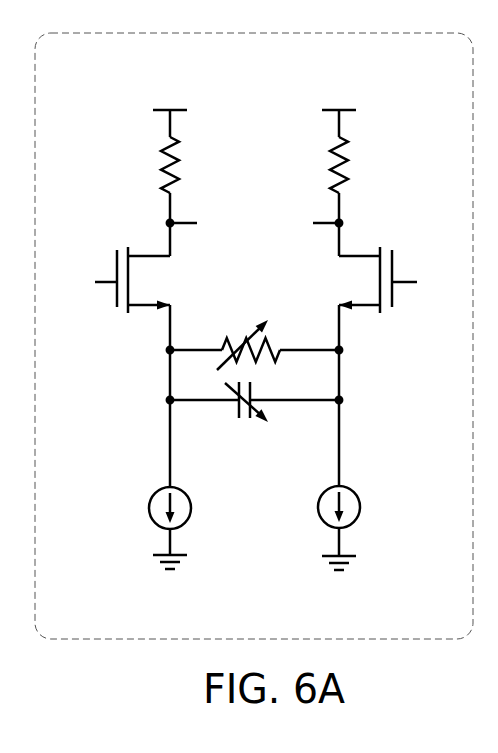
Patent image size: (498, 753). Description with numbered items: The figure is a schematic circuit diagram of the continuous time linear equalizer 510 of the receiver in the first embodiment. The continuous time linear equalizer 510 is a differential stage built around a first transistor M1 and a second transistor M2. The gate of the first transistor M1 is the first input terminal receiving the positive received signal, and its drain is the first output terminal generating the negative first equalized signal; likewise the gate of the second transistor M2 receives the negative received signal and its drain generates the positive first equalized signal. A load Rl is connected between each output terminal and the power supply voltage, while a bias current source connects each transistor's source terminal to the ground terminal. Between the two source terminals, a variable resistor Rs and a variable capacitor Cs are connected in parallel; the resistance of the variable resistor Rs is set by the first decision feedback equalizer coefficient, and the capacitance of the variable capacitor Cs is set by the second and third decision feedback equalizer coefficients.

The continuous time linear equalizer 510 is at (254, 336).
The first transistor M1 is at (145, 280).
The second transistor M2 is at (365, 280).
The variable resistor Rs is at (254, 349).
The variable capacitor Cs is at (254, 404).
The load Rl is at (266, 151).